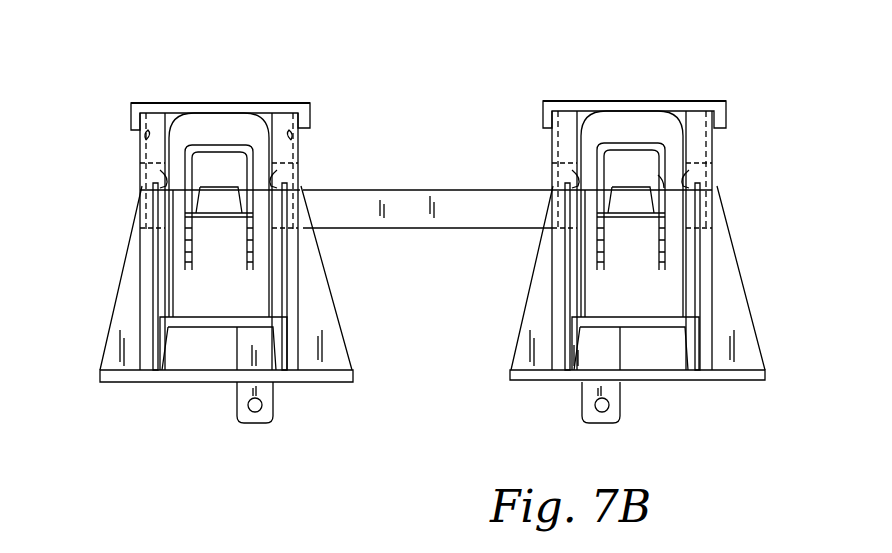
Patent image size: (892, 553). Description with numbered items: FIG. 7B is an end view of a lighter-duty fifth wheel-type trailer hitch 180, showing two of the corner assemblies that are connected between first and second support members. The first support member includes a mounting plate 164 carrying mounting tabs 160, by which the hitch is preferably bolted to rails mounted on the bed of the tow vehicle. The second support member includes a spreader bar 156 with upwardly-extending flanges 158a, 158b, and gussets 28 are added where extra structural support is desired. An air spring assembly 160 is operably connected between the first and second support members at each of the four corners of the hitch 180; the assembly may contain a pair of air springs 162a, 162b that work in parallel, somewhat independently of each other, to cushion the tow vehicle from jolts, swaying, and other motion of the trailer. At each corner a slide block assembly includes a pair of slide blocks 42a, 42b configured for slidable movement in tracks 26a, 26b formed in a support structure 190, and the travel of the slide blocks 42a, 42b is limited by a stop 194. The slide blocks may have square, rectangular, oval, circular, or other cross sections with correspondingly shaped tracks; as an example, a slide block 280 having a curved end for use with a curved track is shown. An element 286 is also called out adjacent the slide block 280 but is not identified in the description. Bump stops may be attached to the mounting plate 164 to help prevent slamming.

The fifth wheel hitch 180 is at (398, 90).
The support structure 190 is at (129, 105).
The upwardly-extending flange 158a is at (190, 103).
The upwardly-extending flange 158b is at (608, 101).
The air spring 162a is at (262, 118).
The air spring 162b is at (680, 118).
The track 26a is at (146, 140).
The track 26b is at (291, 140).
The slide block 42a is at (140, 190).
The slide block 42b is at (277, 186).
The stop 194 is at (215, 320).
The gusset 28 is at (110, 338).
The mounting plate 164 is at (140, 385).
The mounting tab 160 is at (275, 410).
The spreader bar 156 is at (463, 232).
The slide block 280 is at (668, 187).
The bracket flange 286 is at (718, 198).